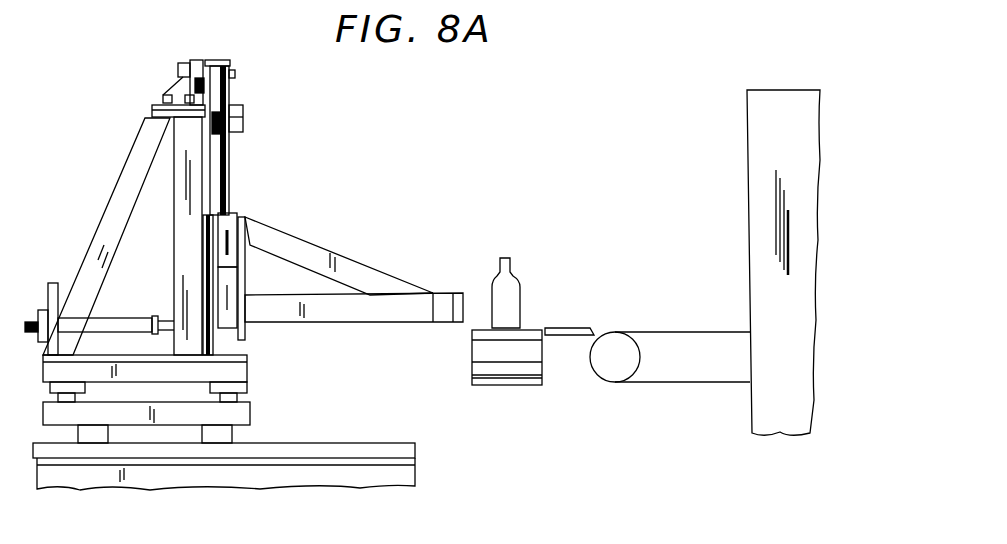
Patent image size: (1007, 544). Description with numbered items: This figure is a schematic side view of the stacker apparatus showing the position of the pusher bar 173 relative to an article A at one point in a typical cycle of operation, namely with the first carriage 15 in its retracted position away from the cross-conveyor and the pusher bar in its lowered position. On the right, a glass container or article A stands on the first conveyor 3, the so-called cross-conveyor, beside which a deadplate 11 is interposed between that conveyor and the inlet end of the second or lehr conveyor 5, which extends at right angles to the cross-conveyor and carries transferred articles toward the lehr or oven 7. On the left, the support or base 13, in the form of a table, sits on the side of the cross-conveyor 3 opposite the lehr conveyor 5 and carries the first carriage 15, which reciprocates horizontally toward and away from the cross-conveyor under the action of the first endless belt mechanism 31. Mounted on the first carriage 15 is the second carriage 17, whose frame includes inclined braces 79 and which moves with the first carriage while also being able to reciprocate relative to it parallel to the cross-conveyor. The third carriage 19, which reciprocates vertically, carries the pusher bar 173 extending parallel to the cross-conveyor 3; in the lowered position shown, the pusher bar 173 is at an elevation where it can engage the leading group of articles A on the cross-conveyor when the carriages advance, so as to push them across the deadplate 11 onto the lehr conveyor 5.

The first conveyor 3 is at (520, 385).
The second conveyor 5 is at (690, 328).
The lehr 7 is at (747, 128).
The deadplate 11 is at (572, 330).
The support 13 is at (420, 468).
The first carriage 15 is at (262, 407).
The second carriage 17 is at (256, 364).
The third carriage 19 is at (369, 254).
The first endless belt mechanism 31 is at (232, 186).
The inclined braces 79 is at (125, 205).
The pusher bar 173 is at (466, 300).
The articles A is at (518, 283).